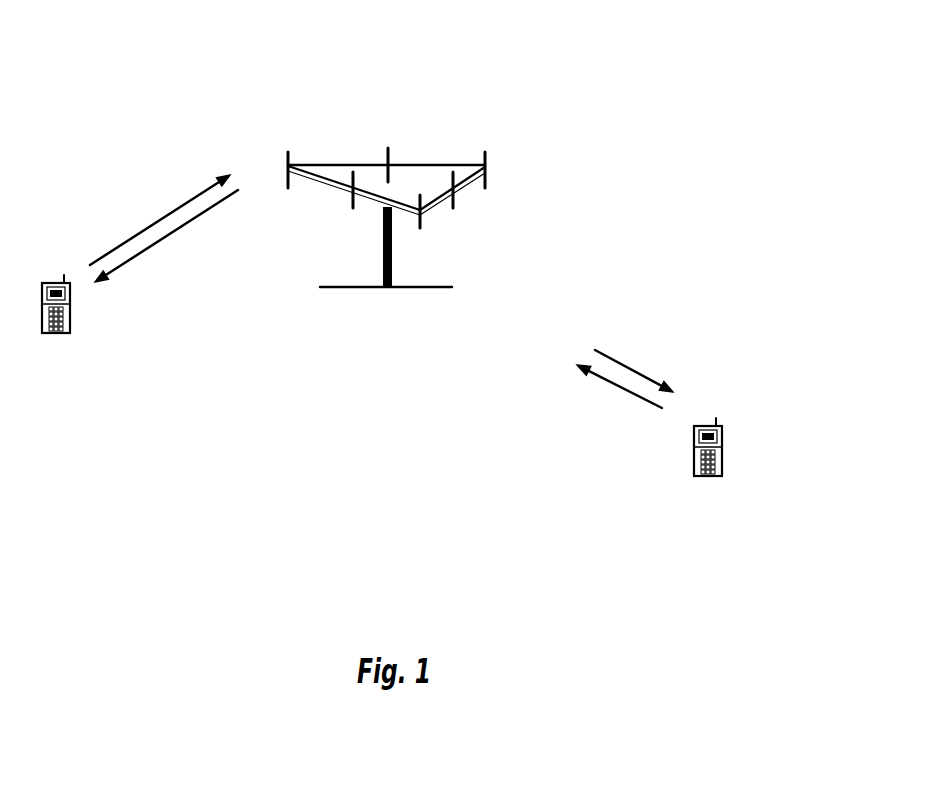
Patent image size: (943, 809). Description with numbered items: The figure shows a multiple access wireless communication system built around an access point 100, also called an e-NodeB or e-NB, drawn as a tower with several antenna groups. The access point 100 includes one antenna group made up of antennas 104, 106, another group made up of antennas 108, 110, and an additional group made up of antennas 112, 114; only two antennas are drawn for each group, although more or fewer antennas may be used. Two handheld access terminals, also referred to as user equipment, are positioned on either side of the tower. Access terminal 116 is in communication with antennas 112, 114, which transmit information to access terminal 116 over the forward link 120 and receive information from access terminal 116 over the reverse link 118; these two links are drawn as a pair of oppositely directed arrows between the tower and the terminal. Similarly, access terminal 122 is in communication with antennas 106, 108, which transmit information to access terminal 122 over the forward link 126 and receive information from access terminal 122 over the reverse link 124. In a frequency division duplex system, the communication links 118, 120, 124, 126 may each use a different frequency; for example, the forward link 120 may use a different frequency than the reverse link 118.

The access point 100 is at (363, 288).
The antenna 104 is at (420, 227).
The antenna 106 is at (453, 208).
The antenna 108 is at (486, 183).
The antenna 110 is at (388, 148).
The antenna 112 is at (290, 165).
The antenna 114 is at (353, 208).
The access terminal 116 is at (55, 282).
The reverse link 118 is at (158, 220).
The forward link 120 is at (175, 232).
The access terminal 122 is at (708, 425).
The reverse link 124 is at (607, 377).
The forward link 126 is at (642, 370).